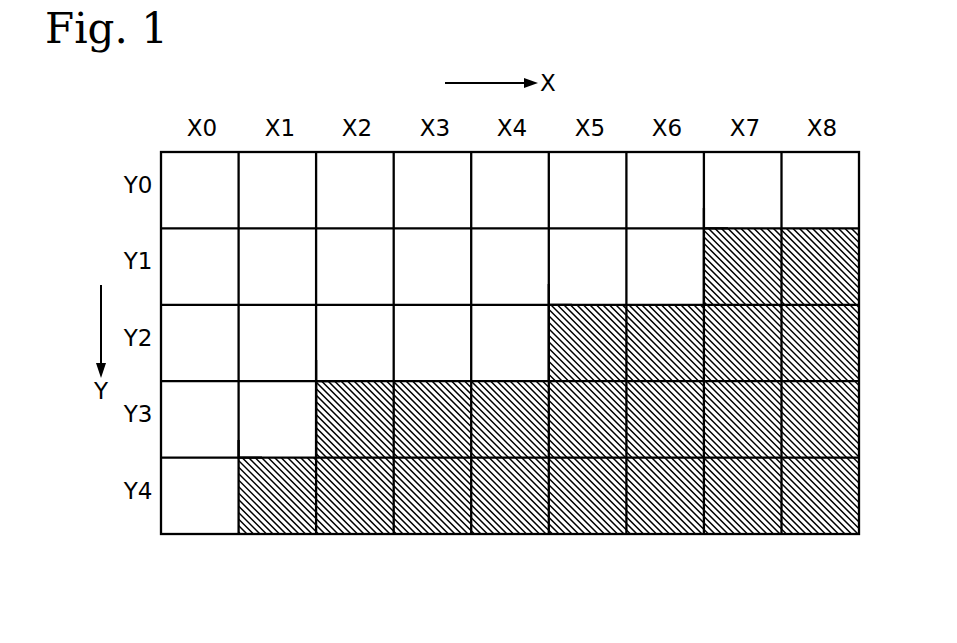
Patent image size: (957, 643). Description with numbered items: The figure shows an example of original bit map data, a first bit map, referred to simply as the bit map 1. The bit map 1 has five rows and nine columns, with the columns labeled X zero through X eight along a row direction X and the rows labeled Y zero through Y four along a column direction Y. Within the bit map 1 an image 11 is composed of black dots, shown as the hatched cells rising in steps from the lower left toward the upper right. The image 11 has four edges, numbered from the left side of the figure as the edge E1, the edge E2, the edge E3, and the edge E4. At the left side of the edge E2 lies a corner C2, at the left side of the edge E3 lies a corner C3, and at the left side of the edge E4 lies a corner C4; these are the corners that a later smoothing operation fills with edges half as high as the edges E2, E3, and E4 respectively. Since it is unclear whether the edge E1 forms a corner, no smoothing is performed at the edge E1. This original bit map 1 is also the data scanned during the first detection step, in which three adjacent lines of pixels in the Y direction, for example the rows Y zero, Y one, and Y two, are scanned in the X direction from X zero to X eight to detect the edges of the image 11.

The bit map 1 is at (624, 130).
The image 11 is at (677, 510).
The edge E1 is at (240, 456).
The edge E2 is at (318, 378).
The edge E3 is at (551, 302).
The edge E4 is at (706, 226).
The corner C2 is at (312, 430).
The corner C3 is at (540, 358).
The corner C4 is at (697, 285).